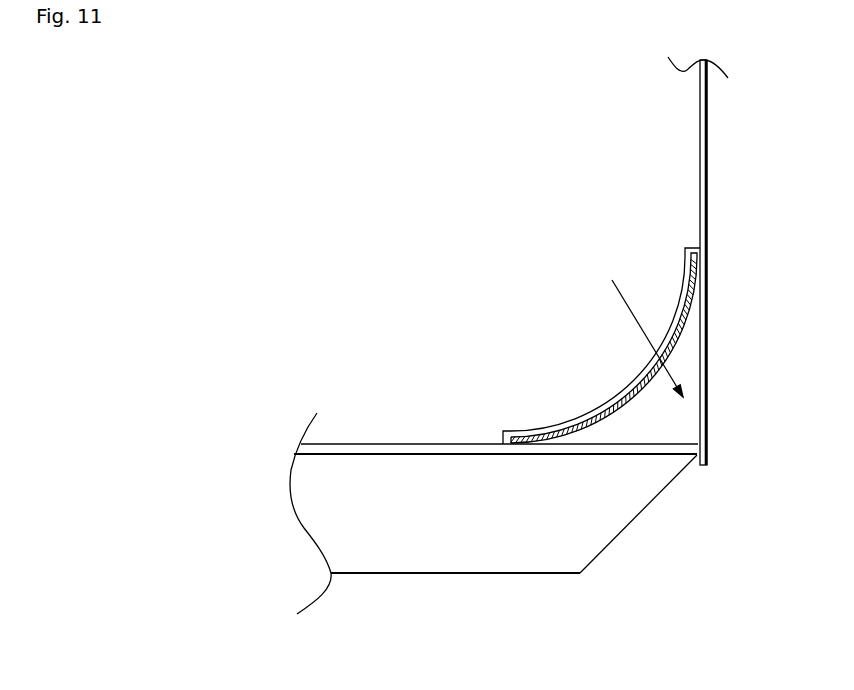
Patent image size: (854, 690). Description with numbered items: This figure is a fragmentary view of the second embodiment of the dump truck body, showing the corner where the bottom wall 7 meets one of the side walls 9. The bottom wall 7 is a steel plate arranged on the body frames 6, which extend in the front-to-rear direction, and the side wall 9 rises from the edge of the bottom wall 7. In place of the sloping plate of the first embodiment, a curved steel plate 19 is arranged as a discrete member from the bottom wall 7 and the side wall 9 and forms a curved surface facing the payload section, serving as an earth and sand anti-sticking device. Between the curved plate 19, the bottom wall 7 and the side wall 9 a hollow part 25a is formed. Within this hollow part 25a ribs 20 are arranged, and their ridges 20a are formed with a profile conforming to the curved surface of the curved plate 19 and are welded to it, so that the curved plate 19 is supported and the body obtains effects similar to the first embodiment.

The body frames 6 is at (470, 573).
The bottom wall 7 is at (418, 445).
The side wall 9 is at (707, 160).
The curved steel plate 19 is at (580, 422).
The rib 20 is at (638, 322).
The ridge 20a is at (618, 392).
The hollow part 25a is at (643, 425).